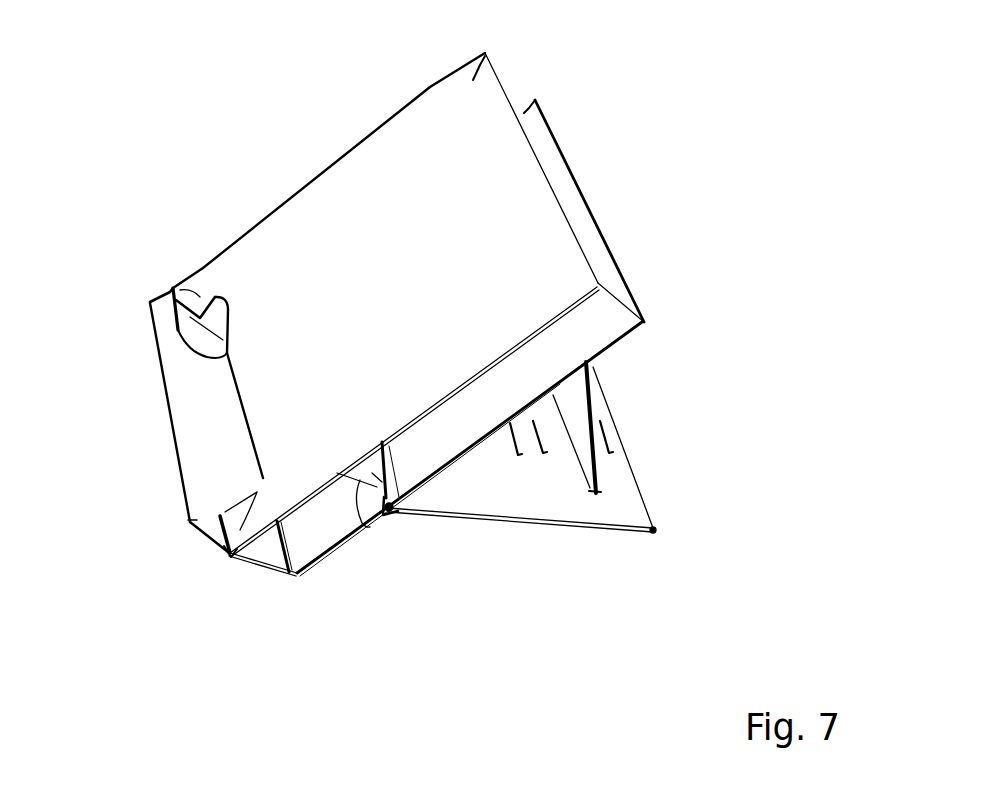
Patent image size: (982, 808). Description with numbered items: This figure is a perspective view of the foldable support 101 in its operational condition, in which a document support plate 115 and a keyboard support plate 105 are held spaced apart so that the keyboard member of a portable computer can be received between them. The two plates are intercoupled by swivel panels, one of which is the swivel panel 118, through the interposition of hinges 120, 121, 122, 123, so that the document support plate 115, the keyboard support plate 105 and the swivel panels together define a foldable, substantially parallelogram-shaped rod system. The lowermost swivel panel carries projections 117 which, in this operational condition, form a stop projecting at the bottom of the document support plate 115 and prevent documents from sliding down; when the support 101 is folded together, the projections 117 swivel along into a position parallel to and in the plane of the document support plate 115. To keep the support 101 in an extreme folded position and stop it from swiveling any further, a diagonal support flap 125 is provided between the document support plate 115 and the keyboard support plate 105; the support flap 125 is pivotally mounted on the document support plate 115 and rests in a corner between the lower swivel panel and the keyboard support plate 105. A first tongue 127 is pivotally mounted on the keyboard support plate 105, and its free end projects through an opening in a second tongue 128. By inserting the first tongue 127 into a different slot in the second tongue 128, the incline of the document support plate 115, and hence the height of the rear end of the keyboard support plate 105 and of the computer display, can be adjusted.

The support 101 is at (600, 163).
The keyboard support plate 105 is at (535, 100).
The document support plate 115 is at (485, 53).
The projections 117 is at (188, 523).
The swivel panel 118 is at (367, 528).
The hinge 120 is at (387, 513).
The hinge 121 is at (337, 475).
The hinge 122 is at (287, 573).
The hinge 123 is at (218, 555).
The diagonal support flap 125 is at (150, 302).
The first tongue 127 is at (578, 400).
The second tongue 128 is at (653, 513).